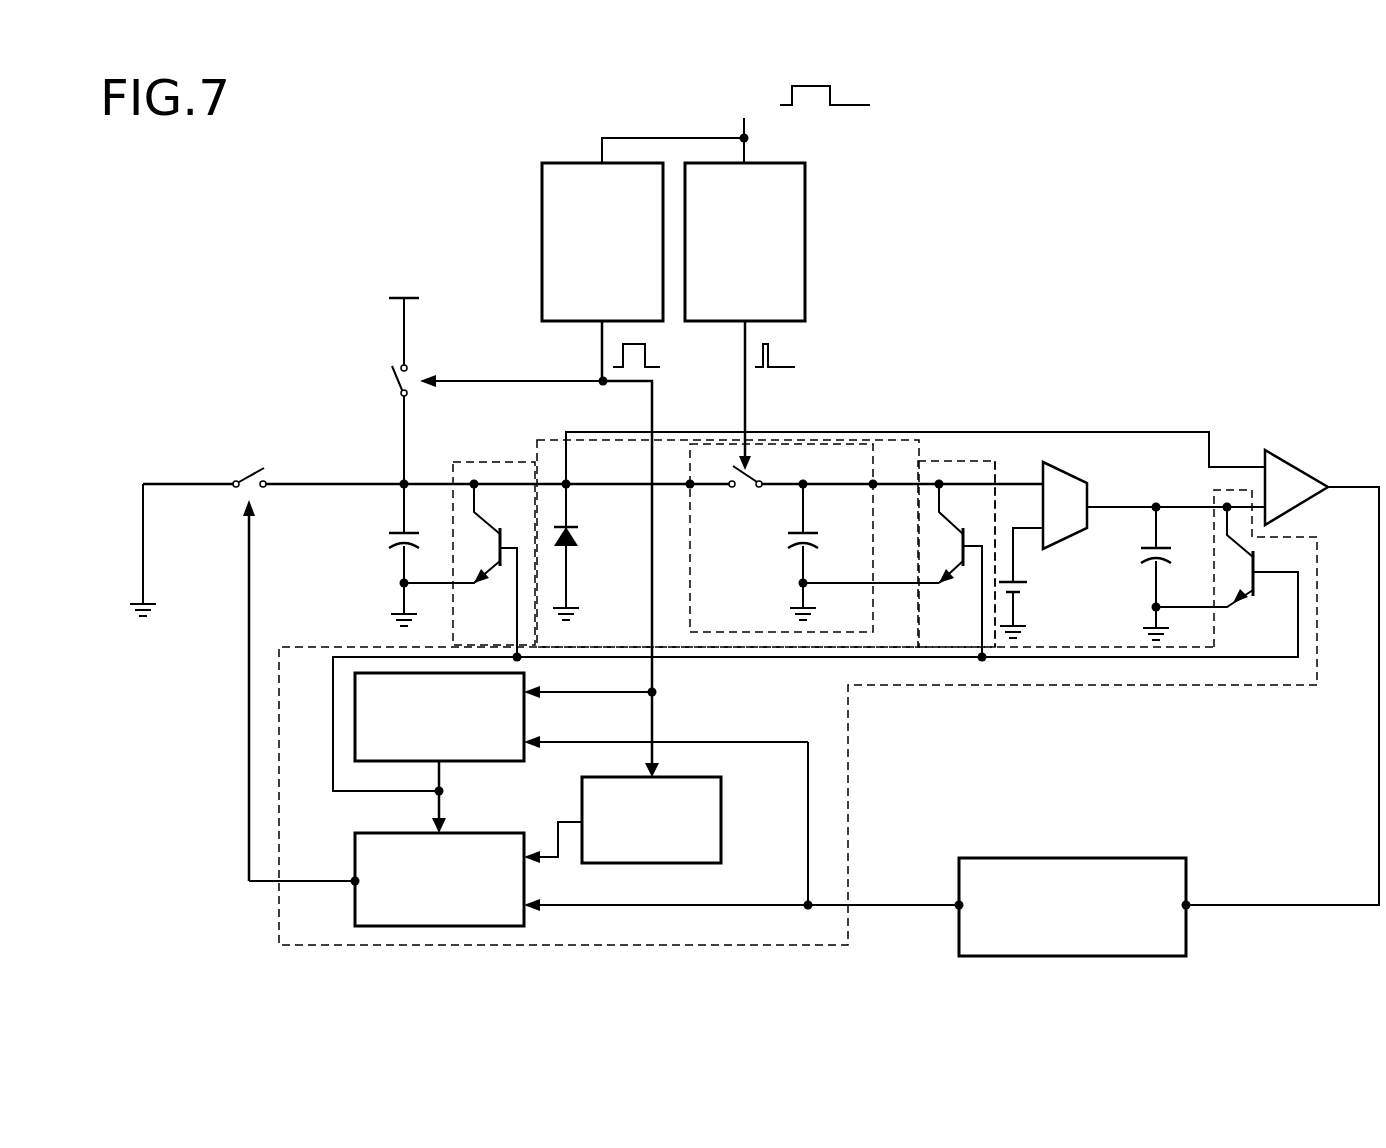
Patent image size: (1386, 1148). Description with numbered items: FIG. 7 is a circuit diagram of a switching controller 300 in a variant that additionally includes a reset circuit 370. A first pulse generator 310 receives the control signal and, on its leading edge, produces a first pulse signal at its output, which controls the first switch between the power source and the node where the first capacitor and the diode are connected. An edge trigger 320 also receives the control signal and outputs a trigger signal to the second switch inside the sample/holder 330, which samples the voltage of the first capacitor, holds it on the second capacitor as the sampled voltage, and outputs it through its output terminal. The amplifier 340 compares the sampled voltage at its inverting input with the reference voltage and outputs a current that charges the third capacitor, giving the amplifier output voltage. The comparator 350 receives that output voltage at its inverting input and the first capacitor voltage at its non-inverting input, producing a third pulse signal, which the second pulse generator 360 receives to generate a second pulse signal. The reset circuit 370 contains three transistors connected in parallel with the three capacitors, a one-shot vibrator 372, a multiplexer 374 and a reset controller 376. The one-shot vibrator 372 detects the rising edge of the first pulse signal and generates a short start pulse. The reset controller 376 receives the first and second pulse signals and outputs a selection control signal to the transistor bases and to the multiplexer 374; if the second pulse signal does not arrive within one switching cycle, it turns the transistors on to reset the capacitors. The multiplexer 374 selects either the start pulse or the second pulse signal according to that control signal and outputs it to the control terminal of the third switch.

The switching controller 300 is at (542, 110).
The pulse generator 310 is at (571, 163).
The edge trigger 320 is at (783, 163).
The sample/holder 330 is at (690, 598).
The amplifier 340 is at (1082, 460).
The comparator 350 is at (1297, 459).
The pulse generator 360 is at (1116, 858).
The reset circuit 370 is at (955, 688).
The one-shot vibrator 372 is at (722, 814).
The multiplexer 374 is at (355, 866).
The reset controller 376 is at (470, 763).